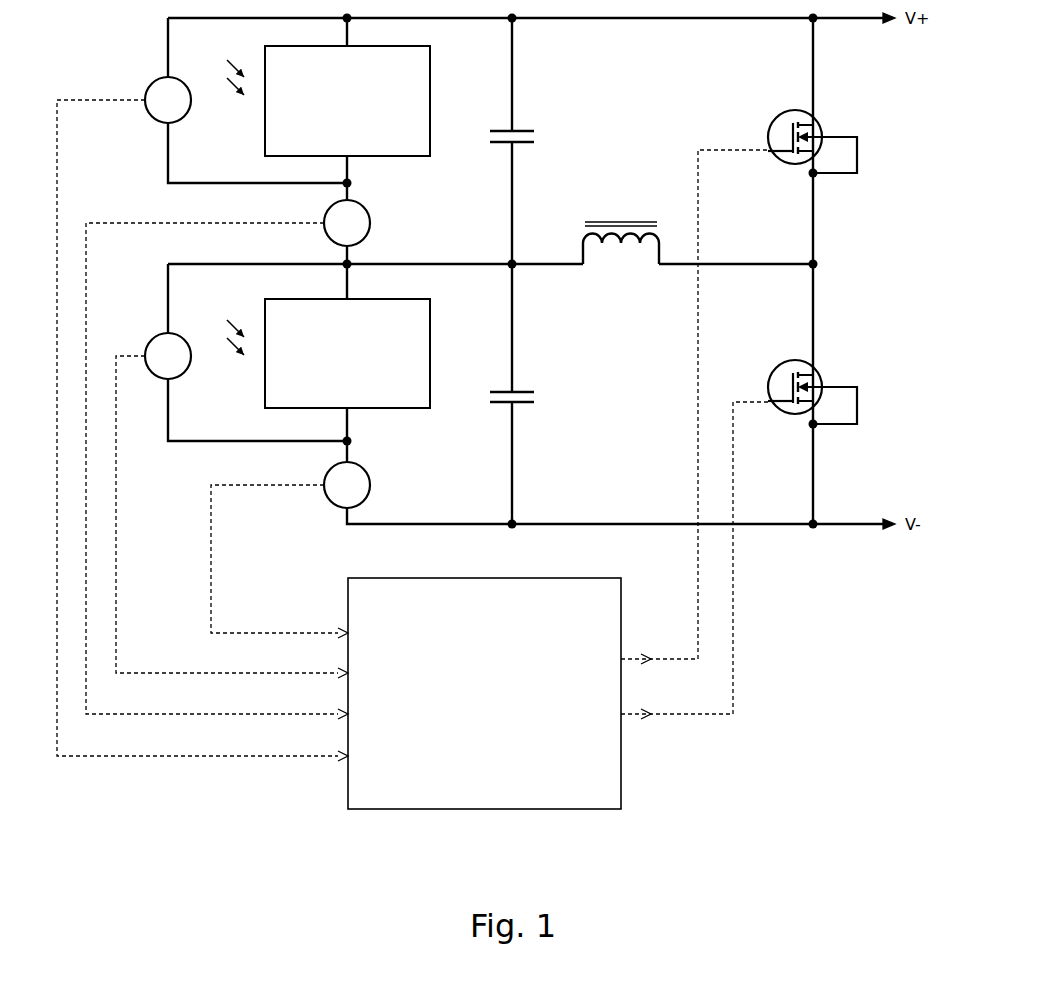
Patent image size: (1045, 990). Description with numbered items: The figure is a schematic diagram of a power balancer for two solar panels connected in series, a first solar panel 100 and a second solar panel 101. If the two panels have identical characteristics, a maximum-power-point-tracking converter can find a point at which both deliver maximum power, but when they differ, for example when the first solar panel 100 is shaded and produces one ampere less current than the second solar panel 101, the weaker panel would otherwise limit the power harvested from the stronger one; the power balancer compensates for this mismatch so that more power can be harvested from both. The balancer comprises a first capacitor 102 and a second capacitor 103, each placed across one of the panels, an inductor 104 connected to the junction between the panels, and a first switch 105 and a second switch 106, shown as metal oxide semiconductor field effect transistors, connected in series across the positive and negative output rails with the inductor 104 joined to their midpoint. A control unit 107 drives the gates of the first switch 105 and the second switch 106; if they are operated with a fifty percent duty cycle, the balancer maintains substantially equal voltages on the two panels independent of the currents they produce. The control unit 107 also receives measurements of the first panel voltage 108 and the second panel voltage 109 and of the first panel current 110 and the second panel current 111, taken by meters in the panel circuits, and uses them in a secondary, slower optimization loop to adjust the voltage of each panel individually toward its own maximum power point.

The solar panel PV1 100 is at (430, 88).
The solar panel PV2 101 is at (430, 335).
The capacitor C1 102 is at (527, 125).
The capacitor C2 103 is at (528, 385).
The inductor L1 104 is at (613, 252).
The switch SW1 105 is at (820, 128).
The switch SW2 106 is at (820, 378).
The control unit 107 is at (621, 770).
The voltage V1 108 is at (151, 85).
The voltage V2 109 is at (152, 340).
The current I1 110 is at (364, 208).
The current I2 111 is at (364, 469).